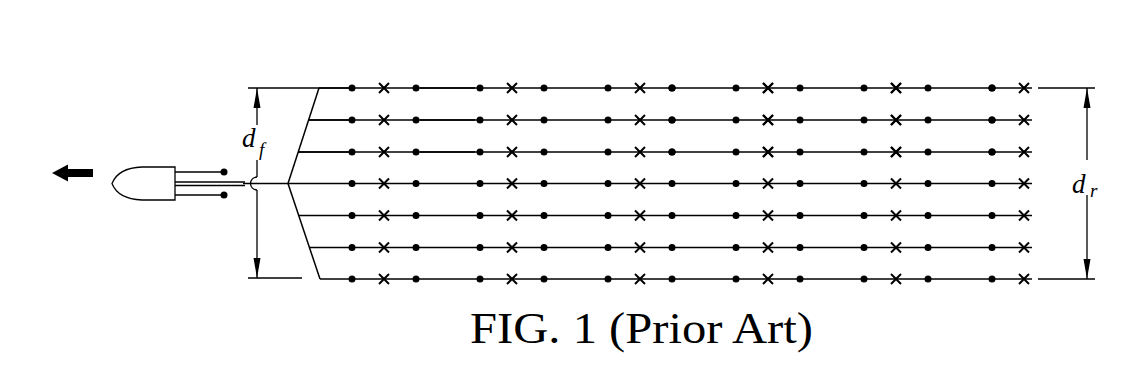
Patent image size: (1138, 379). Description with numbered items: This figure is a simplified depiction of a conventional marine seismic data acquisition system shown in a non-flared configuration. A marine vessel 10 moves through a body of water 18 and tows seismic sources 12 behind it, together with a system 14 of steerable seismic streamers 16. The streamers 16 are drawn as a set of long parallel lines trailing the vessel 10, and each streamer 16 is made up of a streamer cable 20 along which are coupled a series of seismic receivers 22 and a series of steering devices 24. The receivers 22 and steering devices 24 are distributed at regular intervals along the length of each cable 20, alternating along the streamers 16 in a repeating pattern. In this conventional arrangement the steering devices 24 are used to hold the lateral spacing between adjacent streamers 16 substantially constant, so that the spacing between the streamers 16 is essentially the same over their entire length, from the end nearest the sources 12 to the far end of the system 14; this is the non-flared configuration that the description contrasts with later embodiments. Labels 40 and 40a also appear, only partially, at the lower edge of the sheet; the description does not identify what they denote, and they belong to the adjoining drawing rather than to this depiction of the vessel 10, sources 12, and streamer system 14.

In FIG. 1, the marine vessel 10 is at (139, 167).
In FIG. 1, the seismic sources 12 is at (222, 170).
In FIG. 1, the system of steerable seismic streamers 14 is at (557, 58).
In FIG. 1, the seismic streamers 16 is at (319, 145).
In FIG. 1, the body of water 18 is at (118, 251).
In FIG. 1, the streamer cable 20 is at (423, 152).
In FIG. 1, the seismic receivers 22 is at (674, 152).
In FIG. 1, the steering devices 24 is at (894, 152).
In FIG. 2, the sensor 40 is at (848, 378).
In FIG. 2, the sensor element 40a is at (993, 378).